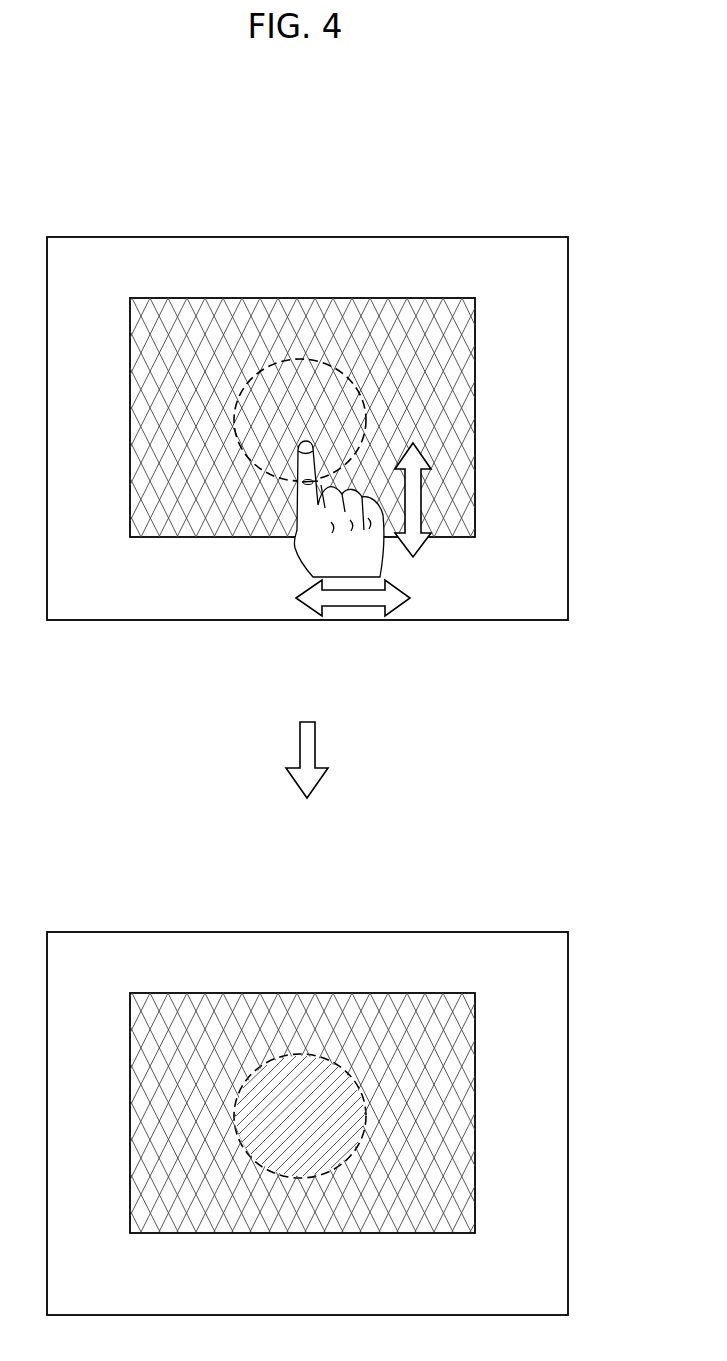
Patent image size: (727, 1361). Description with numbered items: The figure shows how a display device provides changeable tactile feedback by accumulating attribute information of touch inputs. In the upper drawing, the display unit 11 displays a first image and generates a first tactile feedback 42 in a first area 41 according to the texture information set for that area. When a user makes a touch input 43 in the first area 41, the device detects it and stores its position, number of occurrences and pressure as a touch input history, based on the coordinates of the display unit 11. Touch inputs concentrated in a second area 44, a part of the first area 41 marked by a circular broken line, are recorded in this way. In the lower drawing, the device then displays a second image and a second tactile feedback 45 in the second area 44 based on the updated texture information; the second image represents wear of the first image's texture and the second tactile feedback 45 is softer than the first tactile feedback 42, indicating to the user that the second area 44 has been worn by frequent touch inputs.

The display unit 11 is at (548, 295).
The first area 41 is at (475, 426).
The first tactile feedback 42 is at (436, 322).
The touch input 43 is at (315, 555).
The second area 44 is at (302, 360).
The second tactile feedback 45 is at (353, 1113).